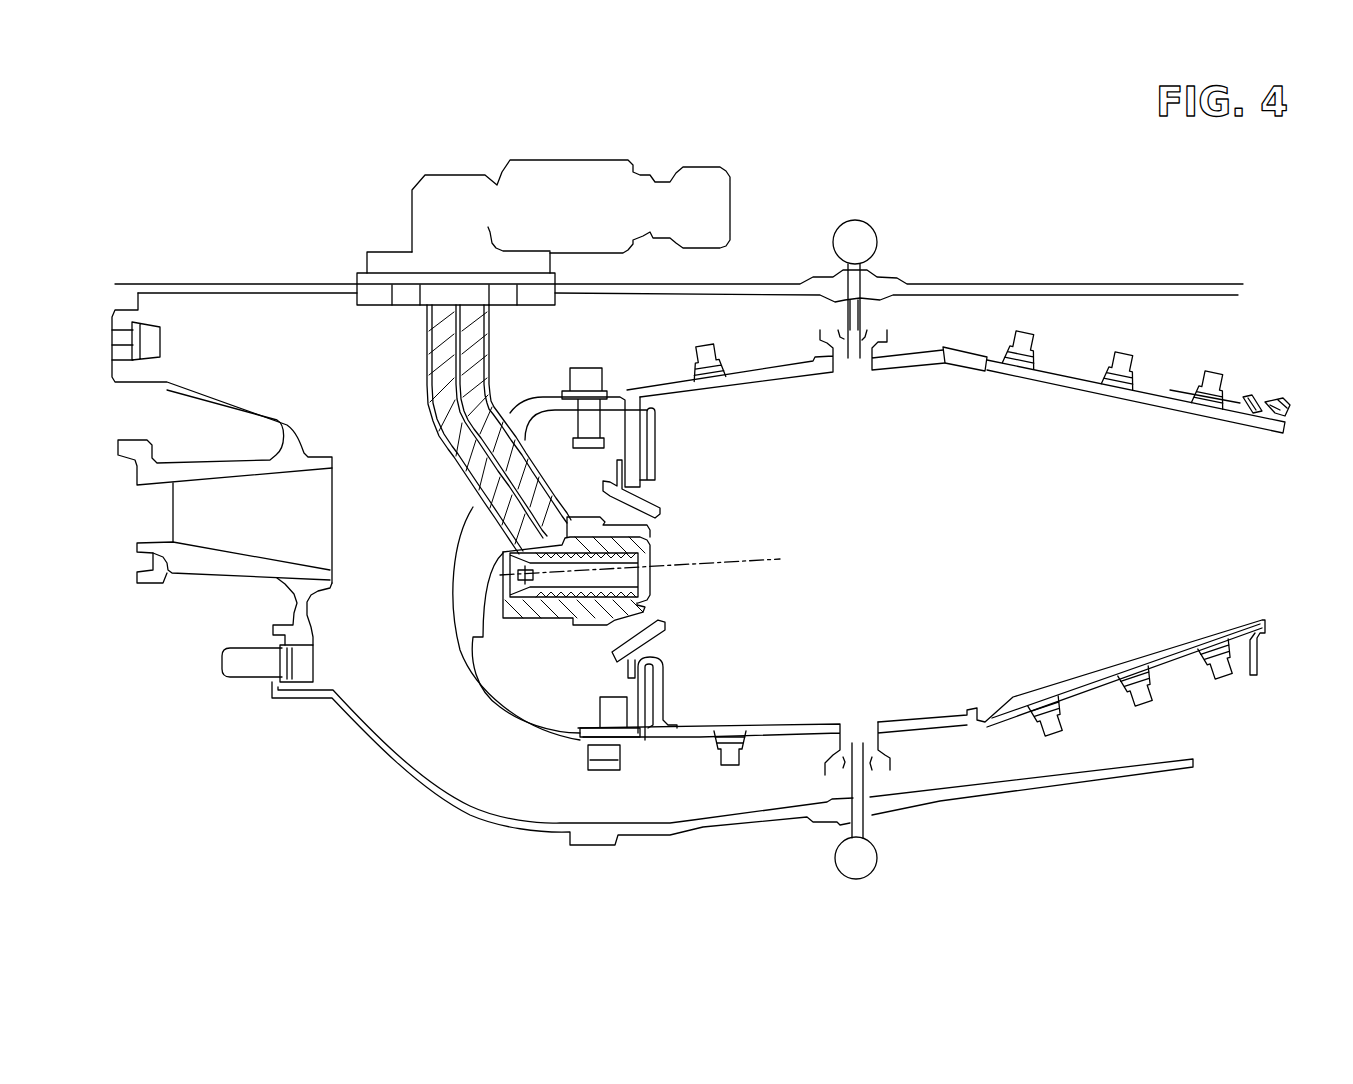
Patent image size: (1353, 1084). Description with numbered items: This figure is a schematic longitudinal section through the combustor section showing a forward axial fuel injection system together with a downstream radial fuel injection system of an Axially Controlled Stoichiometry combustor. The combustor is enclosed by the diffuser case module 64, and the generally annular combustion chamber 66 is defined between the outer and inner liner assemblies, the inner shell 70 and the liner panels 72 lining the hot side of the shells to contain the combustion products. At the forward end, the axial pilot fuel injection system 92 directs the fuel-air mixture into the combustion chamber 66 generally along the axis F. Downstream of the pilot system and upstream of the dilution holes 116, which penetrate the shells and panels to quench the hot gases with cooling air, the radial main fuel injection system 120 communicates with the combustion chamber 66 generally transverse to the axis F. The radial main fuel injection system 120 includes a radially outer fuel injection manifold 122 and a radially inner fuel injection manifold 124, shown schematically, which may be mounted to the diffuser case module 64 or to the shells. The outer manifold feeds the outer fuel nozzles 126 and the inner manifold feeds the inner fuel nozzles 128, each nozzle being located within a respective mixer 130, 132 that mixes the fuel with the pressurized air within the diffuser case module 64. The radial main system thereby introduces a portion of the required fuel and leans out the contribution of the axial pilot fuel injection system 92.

The diffuser case module 64 is at (1172, 287).
The combustion chamber 66 is at (984, 490).
The inner shell 70 is at (697, 770).
The liner panels 72 is at (684, 372).
The axial pilot fuel injection system 92 is at (377, 194).
The dilution holes 116 is at (983, 350).
The radial main fuel injection system 120 is at (883, 253).
The radially outer fuel injection manifold 122 is at (854, 220).
The radially inner fuel injection manifold 124 is at (880, 857).
The outer fuel nozzles 126 is at (860, 320).
The inner fuel nozzles 128 is at (857, 783).
The mixer 130 is at (823, 340).
The mixer 132 is at (813, 772).
The axis F is at (727, 563).